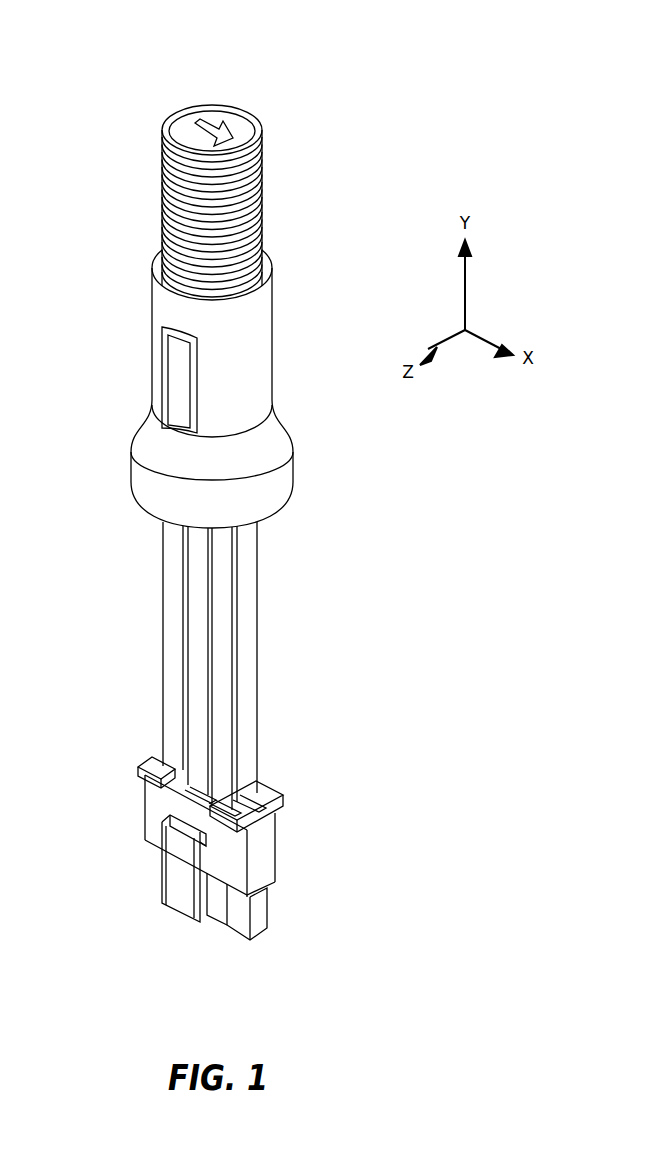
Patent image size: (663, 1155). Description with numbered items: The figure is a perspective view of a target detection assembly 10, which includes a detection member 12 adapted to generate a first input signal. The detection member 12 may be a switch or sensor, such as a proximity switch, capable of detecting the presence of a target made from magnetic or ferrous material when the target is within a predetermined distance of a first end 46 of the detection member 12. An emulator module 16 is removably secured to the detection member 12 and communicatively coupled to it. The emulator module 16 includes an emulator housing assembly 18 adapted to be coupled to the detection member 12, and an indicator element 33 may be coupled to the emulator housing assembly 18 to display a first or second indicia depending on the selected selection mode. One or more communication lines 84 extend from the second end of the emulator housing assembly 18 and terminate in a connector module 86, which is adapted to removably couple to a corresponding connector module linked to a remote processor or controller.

The target detection assembly 10 is at (288, 78).
The detection member 12 is at (126, 199).
The emulator module 16 is at (131, 322).
The emulator housing assembly 18 is at (262, 349).
The indicator element 33 is at (163, 392).
The first end 46 is at (256, 150).
The communication lines 84 is at (273, 725).
The connector module 86 is at (263, 852).